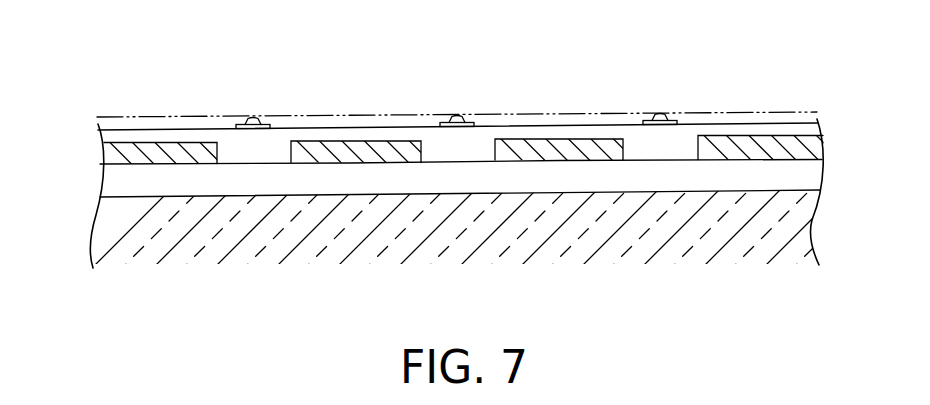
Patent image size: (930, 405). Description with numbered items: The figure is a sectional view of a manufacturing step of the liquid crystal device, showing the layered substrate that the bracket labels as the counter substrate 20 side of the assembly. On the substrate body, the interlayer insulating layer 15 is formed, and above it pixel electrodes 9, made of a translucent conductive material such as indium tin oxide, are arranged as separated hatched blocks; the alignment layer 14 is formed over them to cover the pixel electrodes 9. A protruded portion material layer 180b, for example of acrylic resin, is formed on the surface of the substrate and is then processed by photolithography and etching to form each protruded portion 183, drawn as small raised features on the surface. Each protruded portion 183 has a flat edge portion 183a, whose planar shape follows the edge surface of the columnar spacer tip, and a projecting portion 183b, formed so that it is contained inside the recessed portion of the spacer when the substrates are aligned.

The counter substrate 20 is at (78, 130).
The alignment layer 14 is at (815, 130).
The pixel electrode 9 is at (828, 145).
The interlayer insulating layer 15 is at (817, 175).
The protruded portion material layer 180b is at (563, 112).
The protruded portion 183 is at (256, 105).
The flat edge portion 183a is at (447, 119).
The projecting portion 183b is at (458, 122).